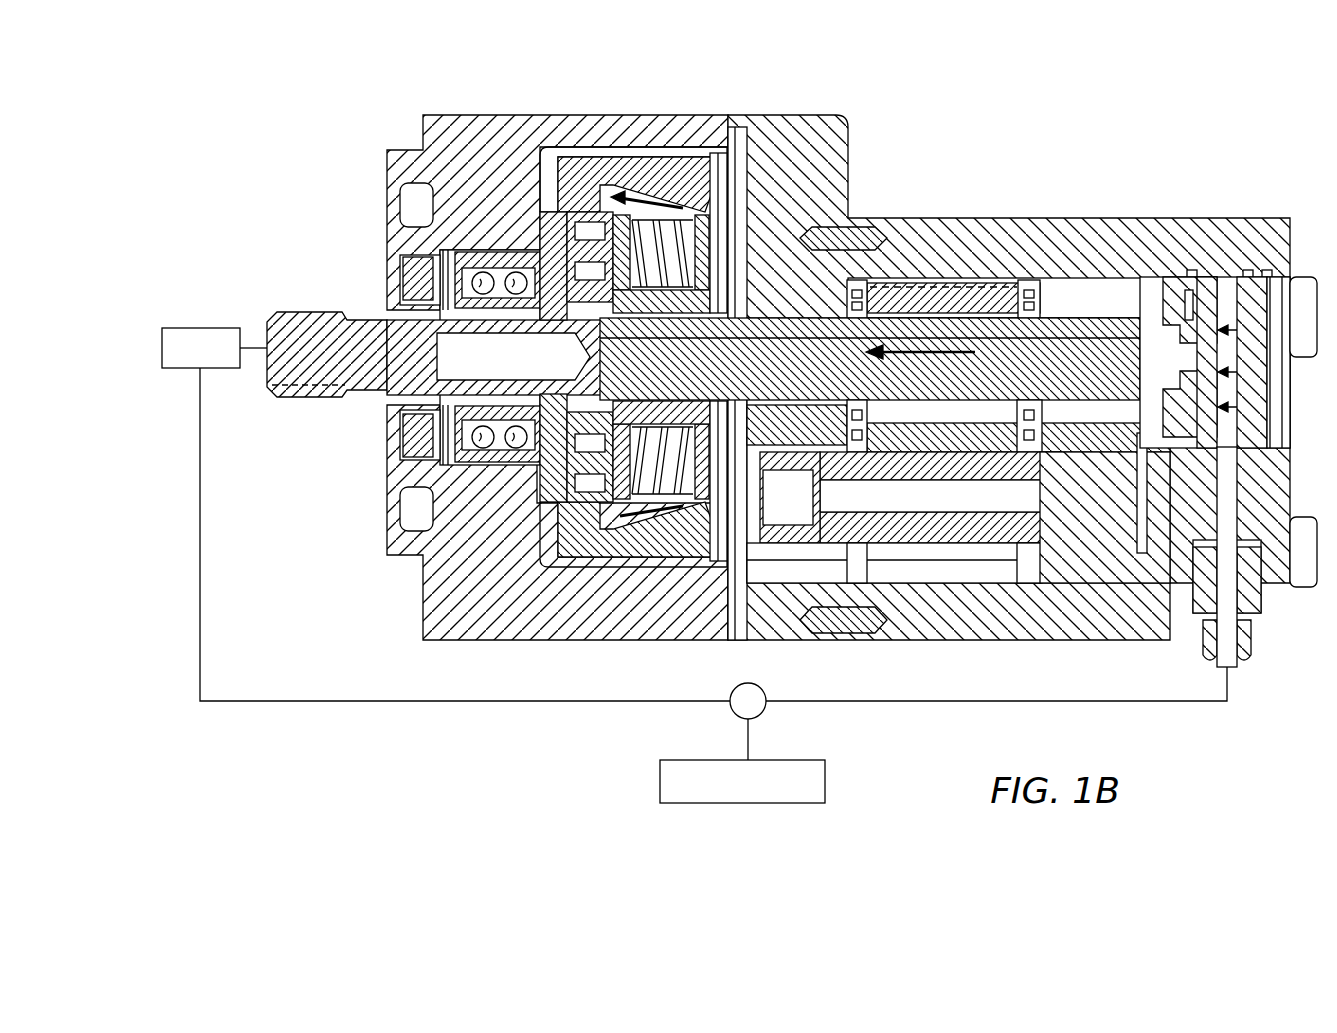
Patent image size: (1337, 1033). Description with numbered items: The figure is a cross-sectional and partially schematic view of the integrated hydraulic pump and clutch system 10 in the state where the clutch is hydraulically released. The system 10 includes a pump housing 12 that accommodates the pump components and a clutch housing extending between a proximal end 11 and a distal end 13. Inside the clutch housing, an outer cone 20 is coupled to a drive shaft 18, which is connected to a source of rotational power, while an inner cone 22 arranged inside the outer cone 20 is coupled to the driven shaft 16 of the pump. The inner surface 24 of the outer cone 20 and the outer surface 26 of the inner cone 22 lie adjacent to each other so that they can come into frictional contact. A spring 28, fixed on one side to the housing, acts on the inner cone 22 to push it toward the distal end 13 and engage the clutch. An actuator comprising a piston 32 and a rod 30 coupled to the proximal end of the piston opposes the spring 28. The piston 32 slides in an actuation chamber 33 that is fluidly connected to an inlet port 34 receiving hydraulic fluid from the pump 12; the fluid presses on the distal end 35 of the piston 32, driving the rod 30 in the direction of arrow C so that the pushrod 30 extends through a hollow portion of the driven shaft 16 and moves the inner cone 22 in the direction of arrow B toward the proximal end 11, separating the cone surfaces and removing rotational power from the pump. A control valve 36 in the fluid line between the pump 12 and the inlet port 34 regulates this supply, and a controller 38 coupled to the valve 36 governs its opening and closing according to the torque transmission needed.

The system 10 is at (796, 384).
The proximal end 11 is at (498, 367).
The pump housing 12 is at (210, 328).
The distal end 13 is at (1232, 424).
The driven shaft 16 is at (312, 328).
The drive shaft 18 is at (793, 148).
The outer cone 20 is at (571, 158).
The inner cone 22 is at (582, 570).
The inner surface 24 is at (640, 188).
The outer surface 26 is at (640, 548).
The spring 28 is at (690, 222).
The rod 30 is at (1060, 345).
The piston 32 is at (1200, 290).
The actuation chamber 33 is at (1228, 436).
The inlet port 34 is at (1226, 648).
The distal end 35 is at (1260, 356).
The control valve 36 is at (767, 688).
The controller 38 is at (812, 762).
The arrow B is at (640, 197).
The arrow C is at (976, 352).